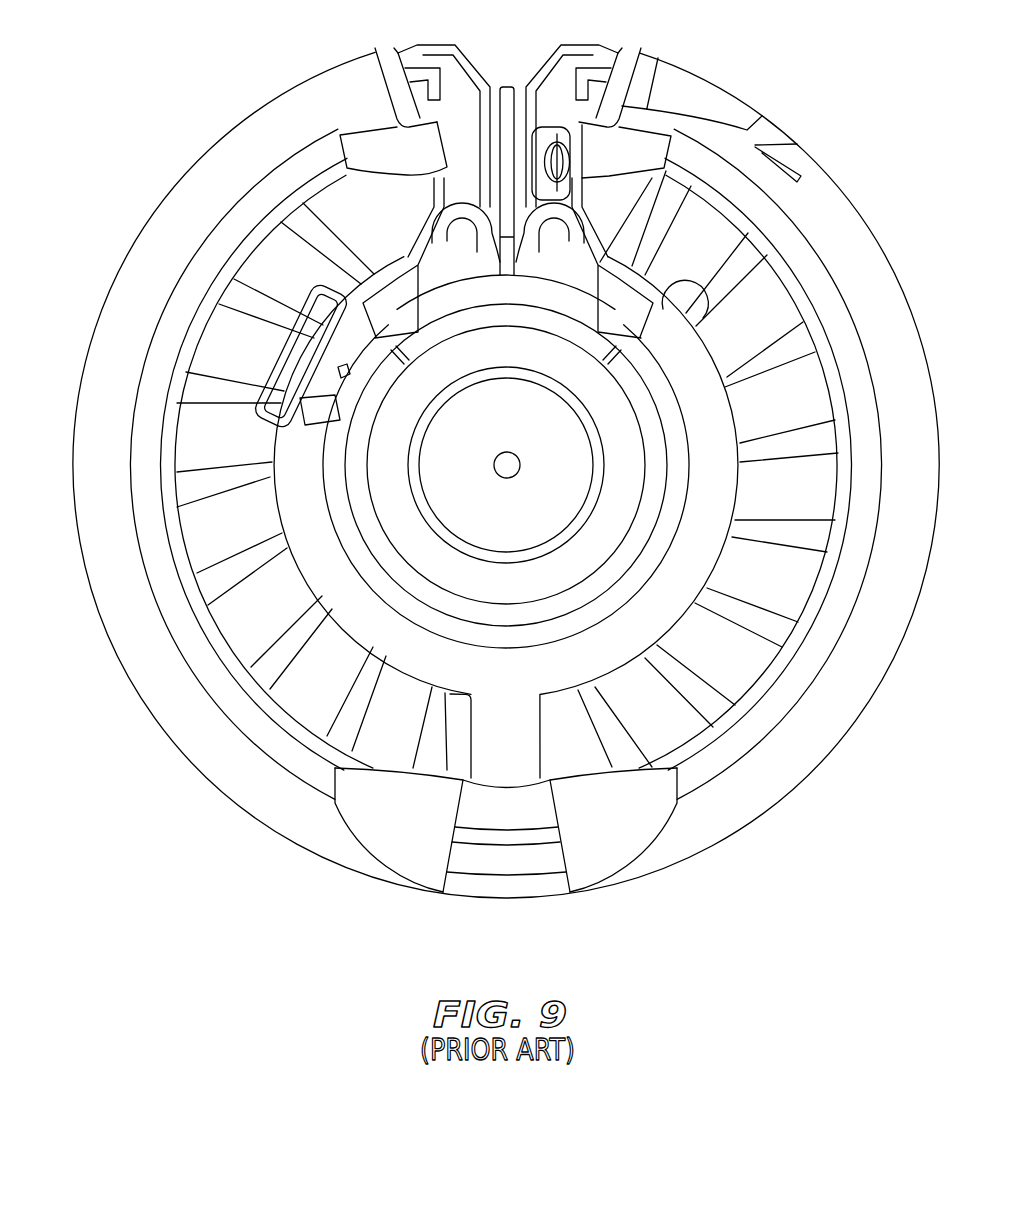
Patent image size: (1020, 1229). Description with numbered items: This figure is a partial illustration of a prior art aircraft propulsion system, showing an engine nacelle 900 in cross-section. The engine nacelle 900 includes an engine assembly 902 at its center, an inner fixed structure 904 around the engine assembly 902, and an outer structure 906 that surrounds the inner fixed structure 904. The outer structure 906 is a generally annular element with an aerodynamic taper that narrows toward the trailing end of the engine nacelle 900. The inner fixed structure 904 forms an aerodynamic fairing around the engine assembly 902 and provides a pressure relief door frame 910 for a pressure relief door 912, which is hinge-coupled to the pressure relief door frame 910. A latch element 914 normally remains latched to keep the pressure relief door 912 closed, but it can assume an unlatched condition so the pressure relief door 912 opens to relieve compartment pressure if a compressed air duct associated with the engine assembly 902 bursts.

The engine nacelle 900 is at (232, 794).
The engine assembly 902 is at (500, 300).
The inner fixed structure 904 is at (600, 233).
The outer structure 906 is at (178, 303).
The pressure relief door frame 910 is at (313, 420).
The pressure relief door 912 is at (338, 350).
The latch element 914 is at (348, 370).